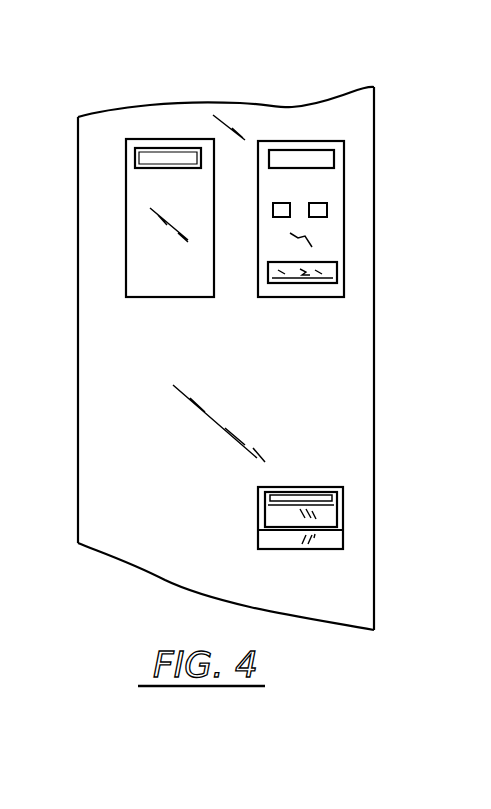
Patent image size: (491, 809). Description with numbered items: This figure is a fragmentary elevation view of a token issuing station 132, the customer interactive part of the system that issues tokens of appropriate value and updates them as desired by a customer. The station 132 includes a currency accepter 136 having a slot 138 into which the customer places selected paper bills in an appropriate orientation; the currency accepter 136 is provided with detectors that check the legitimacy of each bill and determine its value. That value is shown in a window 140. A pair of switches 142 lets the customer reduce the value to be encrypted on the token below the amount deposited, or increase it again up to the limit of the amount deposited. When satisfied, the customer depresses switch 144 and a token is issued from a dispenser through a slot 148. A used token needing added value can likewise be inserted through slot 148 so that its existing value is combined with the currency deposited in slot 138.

The token issuing station 132 is at (115, 450).
The currency accepter 136 is at (192, 288).
The slot 138 is at (165, 157).
The window 140 is at (287, 156).
The pair of switches 142 is at (320, 203).
The switch 144 is at (300, 280).
The slot 148 is at (284, 493).